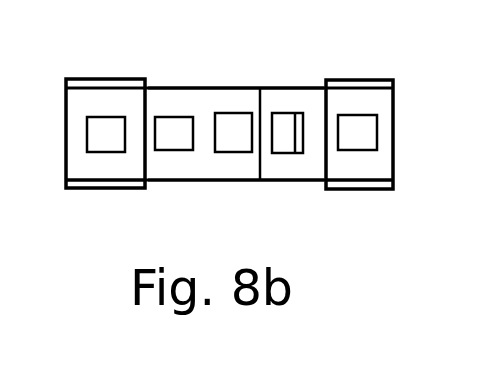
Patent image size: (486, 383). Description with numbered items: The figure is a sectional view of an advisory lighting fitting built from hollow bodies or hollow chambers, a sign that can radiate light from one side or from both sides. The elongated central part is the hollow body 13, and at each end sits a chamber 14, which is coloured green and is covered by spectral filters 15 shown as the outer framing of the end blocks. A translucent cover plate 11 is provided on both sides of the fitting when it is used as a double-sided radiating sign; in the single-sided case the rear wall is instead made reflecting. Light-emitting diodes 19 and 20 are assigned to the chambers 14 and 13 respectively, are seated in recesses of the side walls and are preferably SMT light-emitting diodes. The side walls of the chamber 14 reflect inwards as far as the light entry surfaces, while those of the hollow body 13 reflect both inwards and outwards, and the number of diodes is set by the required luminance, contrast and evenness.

The translucent cover plate 11 is at (272, 88).
The hollow body 13 is at (210, 100).
The chamber 14 is at (113, 160).
The spectral filter 15 is at (362, 85).
The light-emitting diode 19 is at (100, 128).
The light-emitting diode 20 is at (169, 127).